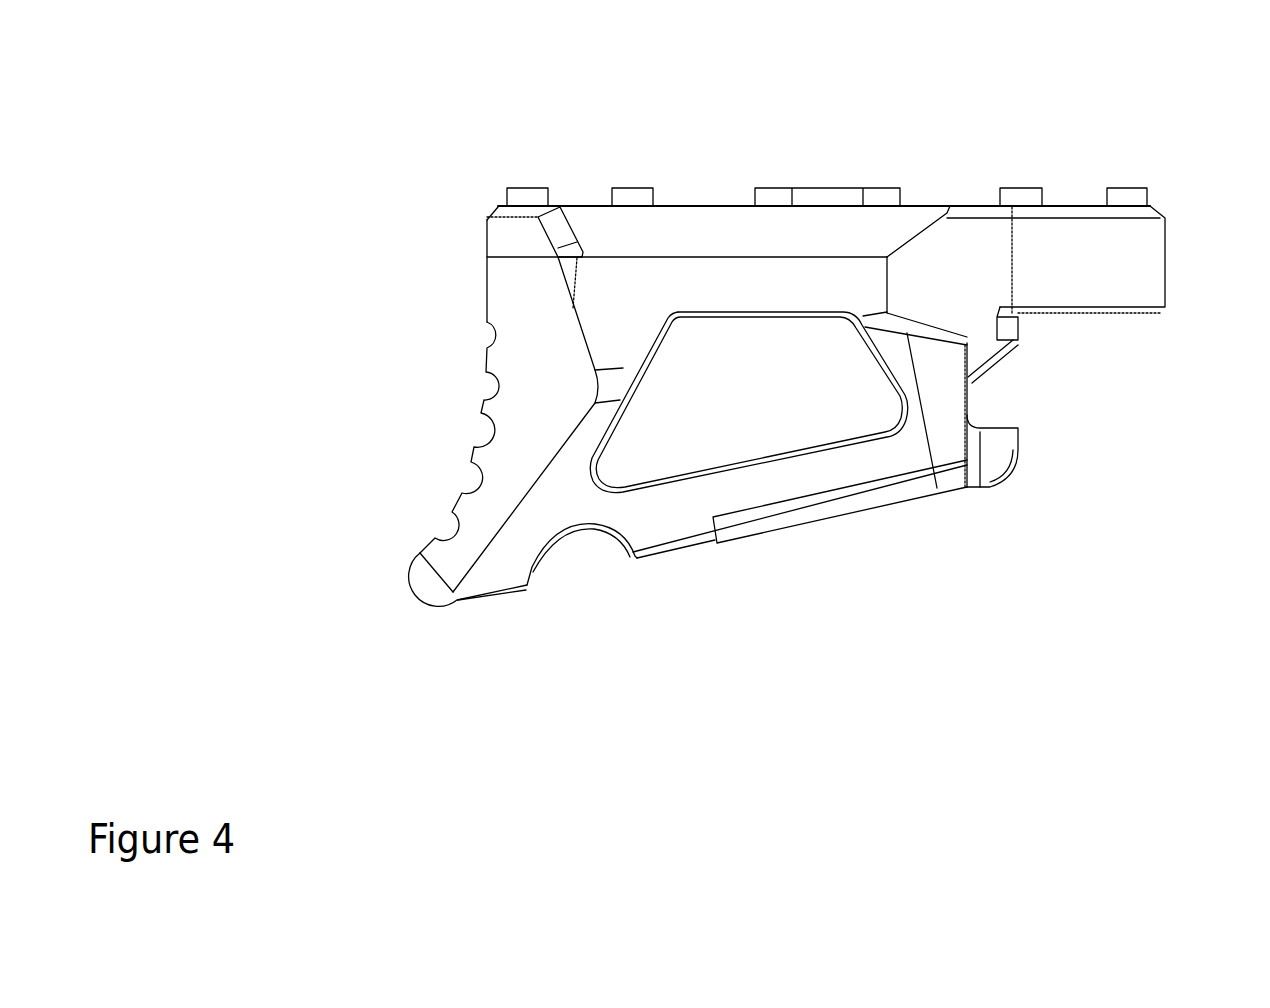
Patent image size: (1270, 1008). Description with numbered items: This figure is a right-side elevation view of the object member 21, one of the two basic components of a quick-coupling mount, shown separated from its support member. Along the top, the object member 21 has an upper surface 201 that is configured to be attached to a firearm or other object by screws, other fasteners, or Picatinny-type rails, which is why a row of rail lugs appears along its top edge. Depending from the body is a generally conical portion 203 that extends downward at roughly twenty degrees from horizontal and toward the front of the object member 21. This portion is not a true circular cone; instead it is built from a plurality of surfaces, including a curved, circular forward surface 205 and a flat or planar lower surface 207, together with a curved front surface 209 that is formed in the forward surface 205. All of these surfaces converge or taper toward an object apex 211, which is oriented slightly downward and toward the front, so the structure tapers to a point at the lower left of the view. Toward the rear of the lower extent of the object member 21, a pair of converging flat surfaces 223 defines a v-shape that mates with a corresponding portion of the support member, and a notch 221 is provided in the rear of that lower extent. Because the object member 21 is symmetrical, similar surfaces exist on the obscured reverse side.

The object member 21 is at (446, 126).
The upper surface 201 is at (1073, 205).
The generally conical portion 203 is at (434, 439).
The curved forward surface 205 is at (543, 355).
The planar lower surface 207 is at (543, 517).
The curved front surface 209 is at (455, 497).
The object apex 211 is at (433, 595).
The notch 221 is at (993, 397).
The converging flat surfaces 223 is at (940, 433).